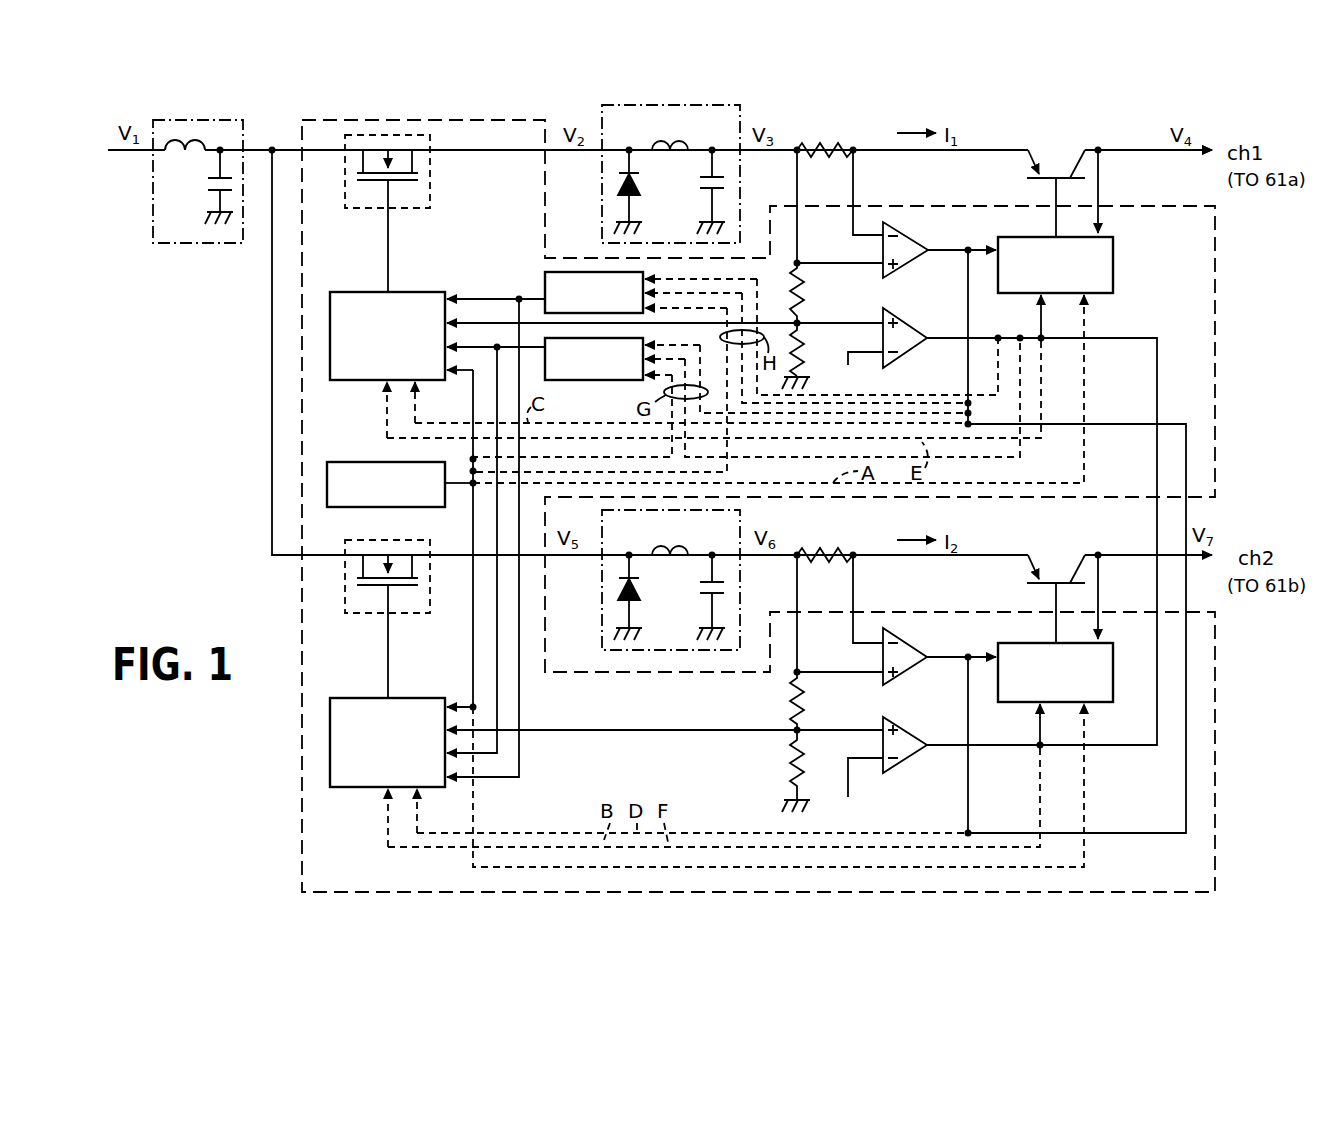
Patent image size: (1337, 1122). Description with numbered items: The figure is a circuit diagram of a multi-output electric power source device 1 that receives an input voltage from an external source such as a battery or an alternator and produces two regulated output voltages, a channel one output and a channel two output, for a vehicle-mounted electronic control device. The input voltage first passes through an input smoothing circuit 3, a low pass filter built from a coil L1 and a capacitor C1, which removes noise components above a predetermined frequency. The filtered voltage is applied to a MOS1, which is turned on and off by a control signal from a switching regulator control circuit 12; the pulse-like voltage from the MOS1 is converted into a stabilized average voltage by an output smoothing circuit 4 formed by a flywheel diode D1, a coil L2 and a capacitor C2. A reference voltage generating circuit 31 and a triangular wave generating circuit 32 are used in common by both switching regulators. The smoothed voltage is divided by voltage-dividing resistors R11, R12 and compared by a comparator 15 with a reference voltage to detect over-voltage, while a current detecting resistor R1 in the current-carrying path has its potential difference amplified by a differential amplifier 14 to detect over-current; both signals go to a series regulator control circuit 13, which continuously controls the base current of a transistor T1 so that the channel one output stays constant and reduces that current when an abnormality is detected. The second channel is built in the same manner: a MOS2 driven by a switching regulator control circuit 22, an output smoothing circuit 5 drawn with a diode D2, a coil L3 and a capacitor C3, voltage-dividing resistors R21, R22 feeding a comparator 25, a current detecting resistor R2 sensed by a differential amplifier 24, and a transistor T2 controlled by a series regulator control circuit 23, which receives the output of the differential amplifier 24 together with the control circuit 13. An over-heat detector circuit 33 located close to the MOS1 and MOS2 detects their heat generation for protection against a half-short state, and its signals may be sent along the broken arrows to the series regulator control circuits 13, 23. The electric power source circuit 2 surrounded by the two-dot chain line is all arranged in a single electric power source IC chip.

The multi-output electric power source device 1 is at (1230, 112).
The electric power source circuit 2 is at (300, 830).
The input smoothing circuit 3 is at (152, 206).
The output smoothing circuit 4 is at (726, 106).
The output smoothing circuit 5 is at (602, 588).
The switching regulator control circuit 12 is at (417, 290).
The series regulator control circuit 13 is at (1113, 263).
The differential amplifier 14 is at (895, 228).
The comparator 15 is at (915, 322).
The switching regulator control circuit 22 is at (368, 697).
The series regulator control circuit 23 is at (1105, 703).
The differential amplifier 24 is at (906, 640).
The comparator 25 is at (908, 730).
The reference voltage generating circuit 31 is at (545, 273).
The triangular wave generating circuit 32 is at (593, 383).
The over-heat detector circuit 33 is at (355, 461).
The MOS MOS1 is at (405, 182).
The MOS MOS2 is at (375, 554).
The coil L1 is at (182, 165).
The capacitor C1 is at (208, 185).
The coil L2 is at (670, 132).
The flywheel diode D1 is at (646, 192).
The capacitor C2 is at (703, 192).
The inductor L3 is at (670, 536).
The diode D2 is at (647, 597).
The capacitor C3 is at (701, 597).
The current detecting resistor R1 is at (830, 141).
The current detecting resistor R2 is at (823, 547).
The voltage-dividing resistor R11 is at (805, 288).
The voltage-dividing resistor R12 is at (807, 361).
The voltage-dividing resistor R21 is at (783, 690).
The voltage-dividing resistor R22 is at (783, 763).
The transistor T1 is at (1053, 157).
The transistor T2 is at (1053, 560).